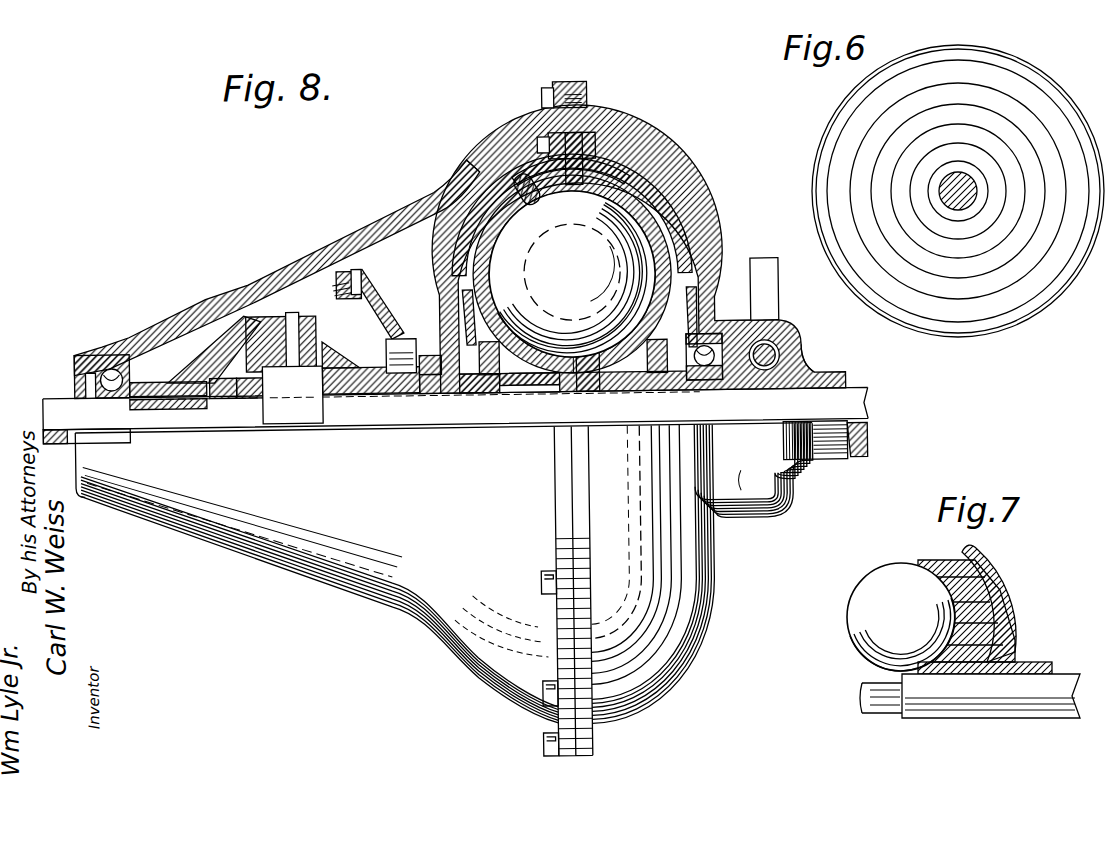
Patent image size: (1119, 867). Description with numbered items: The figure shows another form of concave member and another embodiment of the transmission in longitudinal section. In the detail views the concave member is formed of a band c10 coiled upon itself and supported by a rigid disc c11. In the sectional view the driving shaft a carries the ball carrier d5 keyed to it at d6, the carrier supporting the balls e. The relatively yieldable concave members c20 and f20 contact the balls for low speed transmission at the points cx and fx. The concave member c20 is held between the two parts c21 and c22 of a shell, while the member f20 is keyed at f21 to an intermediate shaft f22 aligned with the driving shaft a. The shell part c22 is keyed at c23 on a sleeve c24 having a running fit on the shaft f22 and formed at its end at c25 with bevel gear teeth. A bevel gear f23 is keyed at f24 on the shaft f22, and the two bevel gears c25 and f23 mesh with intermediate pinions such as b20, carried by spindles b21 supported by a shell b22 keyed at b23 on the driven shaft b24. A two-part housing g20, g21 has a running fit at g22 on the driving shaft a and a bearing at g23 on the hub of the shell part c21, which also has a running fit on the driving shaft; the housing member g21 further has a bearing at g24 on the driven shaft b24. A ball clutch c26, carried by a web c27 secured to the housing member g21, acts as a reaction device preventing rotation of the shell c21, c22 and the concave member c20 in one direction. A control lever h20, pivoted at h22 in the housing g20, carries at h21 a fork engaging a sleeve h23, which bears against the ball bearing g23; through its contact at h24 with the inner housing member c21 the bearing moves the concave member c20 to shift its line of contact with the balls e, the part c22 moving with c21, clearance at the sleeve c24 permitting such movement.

In FIG. 8, the driving shaft a is at (858, 410).
In FIG. 8, the intermediate pinion b20 is at (273, 310).
In FIG. 8, the spindle b21 is at (293, 310).
In FIG. 8, the shell b22 is at (200, 358).
In FIG. 8, the key b23 is at (167, 405).
In FIG. 8, the driven shaft b24 is at (57, 385).
In FIG. 6, the band c10 is at (965, 106).
In FIG. 7, the band c10 is at (977, 612).
In FIG. 6, the rigid disc c11 is at (1022, 64).
In FIG. 7, the rigid disc c11 is at (990, 572).
In FIG. 8, the concave member c20 is at (685, 210).
In FIG. 8, the shell part c21 is at (640, 173).
In FIG. 8, the shell part c22 is at (492, 226).
In FIG. 8, the key c23 is at (450, 380).
In FIG. 8, the sleeve c24 is at (367, 383).
In FIG. 8, the bevel gear teeth c25 is at (337, 366).
In FIG. 8, the ball clutch c26 is at (395, 350).
In FIG. 8, the web c27 is at (383, 322).
In FIG. 8, the contact point cx is at (617, 346).
In FIG. 8, the ball carrier d5 is at (590, 395).
In FIG. 8, the key d6 is at (582, 356).
In FIG. 8, the balls e is at (572, 274).
In FIG. 8, the concave member f20 is at (460, 207).
In FIG. 8, the key f21 is at (523, 394).
In FIG. 8, the intermediate shaft f22 is at (397, 407).
In FIG. 8, the bevel gear f23 is at (253, 392).
In FIG. 8, the key f24 is at (233, 393).
In FIG. 8, the contact point fx is at (531, 205).
In FIG. 8, the housing member g20 is at (622, 128).
In FIG. 8, the housing member g21 is at (213, 296).
In FIG. 8, the running fit g22 is at (868, 373).
In FIG. 8, the ball bearing g23 is at (728, 318).
In FIG. 8, the bearing g24 is at (103, 358).
In FIG. 8, the control lever h20 is at (774, 267).
In FIG. 8, the fork h21 is at (795, 503).
In FIG. 8, the pivot h22 is at (775, 364).
In FIG. 8, the sleeve h23 is at (737, 477).
In FIG. 8, the contact h24 is at (695, 385).